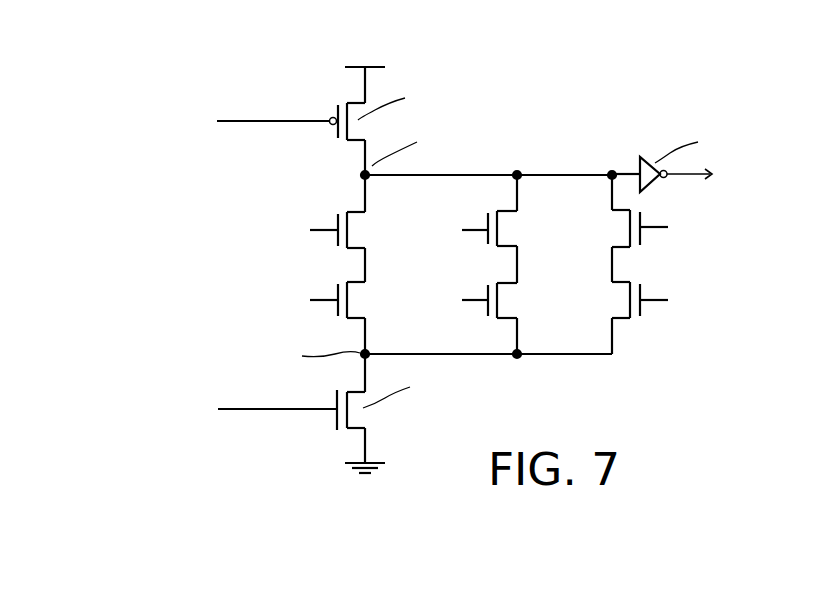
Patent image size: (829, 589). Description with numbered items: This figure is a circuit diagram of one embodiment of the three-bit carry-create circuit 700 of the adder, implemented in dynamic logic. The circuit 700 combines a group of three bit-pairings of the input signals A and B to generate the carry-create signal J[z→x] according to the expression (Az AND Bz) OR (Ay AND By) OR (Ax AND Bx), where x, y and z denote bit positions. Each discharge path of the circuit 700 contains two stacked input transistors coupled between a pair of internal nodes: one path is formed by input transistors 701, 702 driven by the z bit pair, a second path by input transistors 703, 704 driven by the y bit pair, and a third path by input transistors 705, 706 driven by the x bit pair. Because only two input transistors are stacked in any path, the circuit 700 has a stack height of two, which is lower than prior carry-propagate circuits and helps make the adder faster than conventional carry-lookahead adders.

The J3 circuit 700 is at (198, 43).
The NMOS transistor (A_z input) 701 is at (362, 230).
The NMOS transistor (B_z input) 702 is at (362, 305).
The NMOS transistor (A_y input) 703 is at (515, 228).
The NMOS transistor (B_y input) 704 is at (515, 334).
The NMOS transistor (A_x input) 705 is at (613, 222).
The NMOS transistor (B_x input) 706 is at (613, 305).